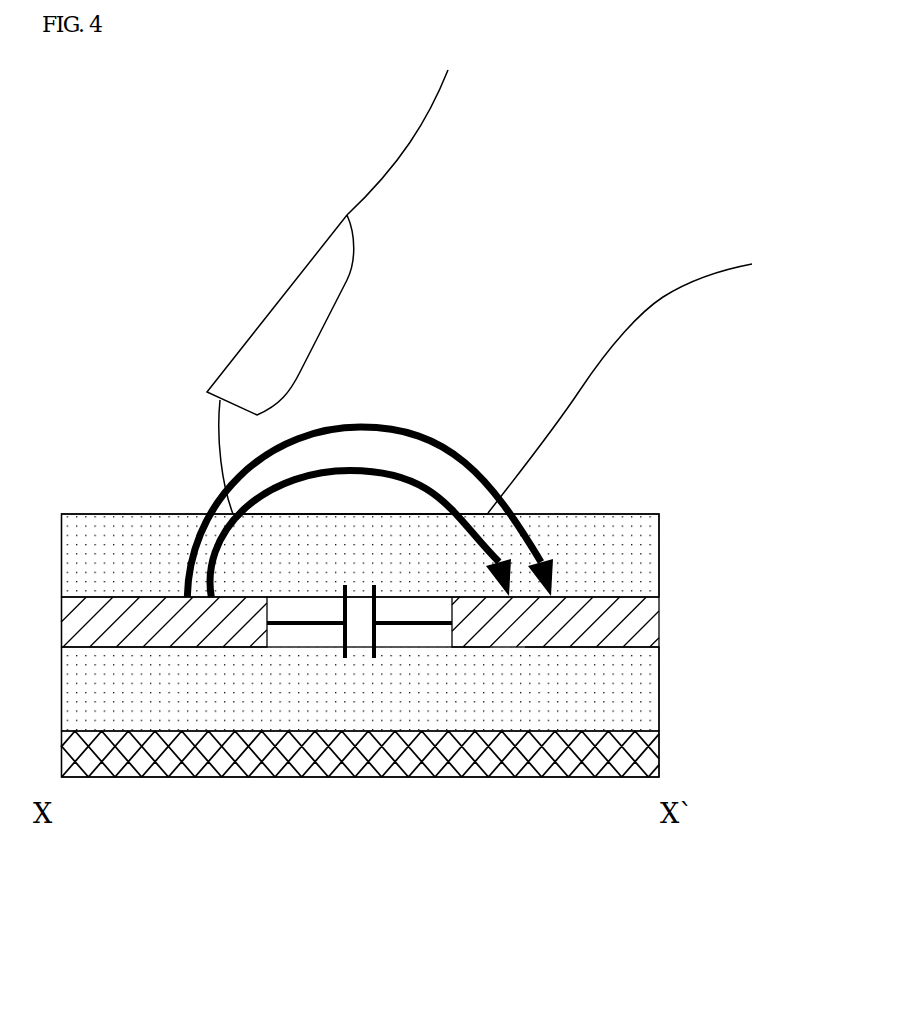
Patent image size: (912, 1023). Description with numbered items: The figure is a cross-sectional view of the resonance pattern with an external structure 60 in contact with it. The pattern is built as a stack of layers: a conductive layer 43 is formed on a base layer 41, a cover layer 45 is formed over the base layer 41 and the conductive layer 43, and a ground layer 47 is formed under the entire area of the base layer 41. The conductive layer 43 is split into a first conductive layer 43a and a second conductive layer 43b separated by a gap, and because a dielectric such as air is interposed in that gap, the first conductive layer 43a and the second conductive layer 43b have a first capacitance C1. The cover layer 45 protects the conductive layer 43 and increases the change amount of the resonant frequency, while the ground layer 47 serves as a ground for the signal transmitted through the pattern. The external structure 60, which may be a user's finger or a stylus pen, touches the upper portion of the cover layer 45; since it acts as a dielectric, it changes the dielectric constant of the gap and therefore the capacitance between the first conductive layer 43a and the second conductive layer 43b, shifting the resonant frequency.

The external structure 60 is at (665, 203).
The cover layer 45 is at (633, 517).
The base layer 41 is at (659, 702).
The ground layer 47 is at (659, 767).
The conductive layer 43 is at (360, 792).
The first conductive layer 43a is at (128, 623).
The second conductive layer 43b is at (579, 623).
The first capacitance C1 is at (395, 624).